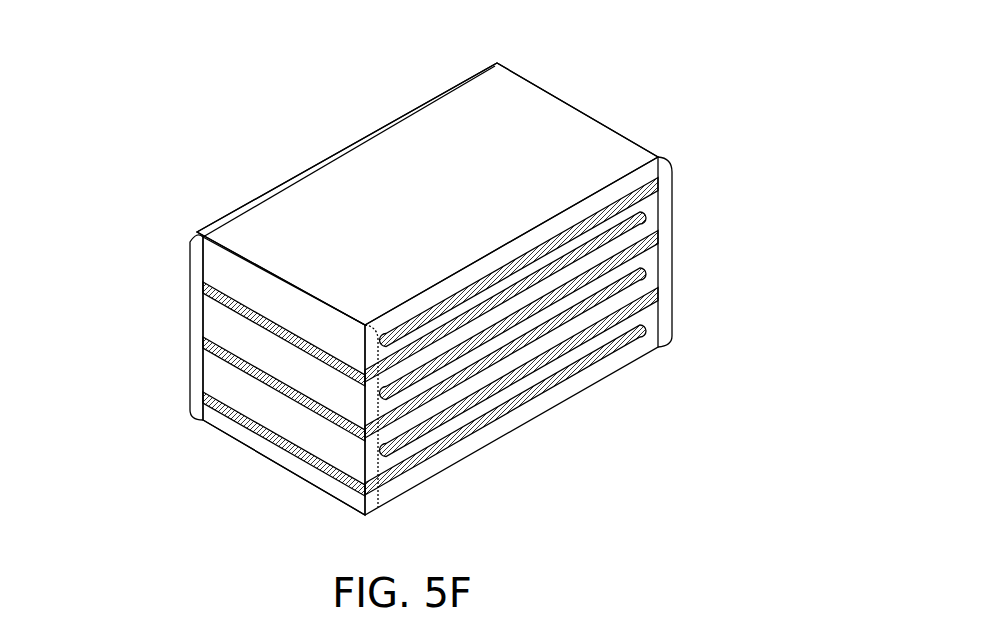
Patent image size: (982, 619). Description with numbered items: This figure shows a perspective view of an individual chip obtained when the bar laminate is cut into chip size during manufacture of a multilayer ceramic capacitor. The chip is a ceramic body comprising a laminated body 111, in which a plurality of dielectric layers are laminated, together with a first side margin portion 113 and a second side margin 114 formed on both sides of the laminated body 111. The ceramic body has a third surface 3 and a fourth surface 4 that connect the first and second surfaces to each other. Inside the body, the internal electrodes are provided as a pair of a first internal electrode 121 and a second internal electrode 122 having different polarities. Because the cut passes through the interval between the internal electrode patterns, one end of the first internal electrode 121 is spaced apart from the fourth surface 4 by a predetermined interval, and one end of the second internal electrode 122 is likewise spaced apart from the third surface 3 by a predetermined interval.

The third surface 3 is at (232, 457).
The fourth surface 4 is at (633, 122).
The laminate 111 is at (543, 112).
The first side margin portion 113 is at (196, 232).
The second side margin 114 is at (465, 442).
The first internal electrode 121 is at (297, 447).
The second internal electrode 122 is at (670, 209).